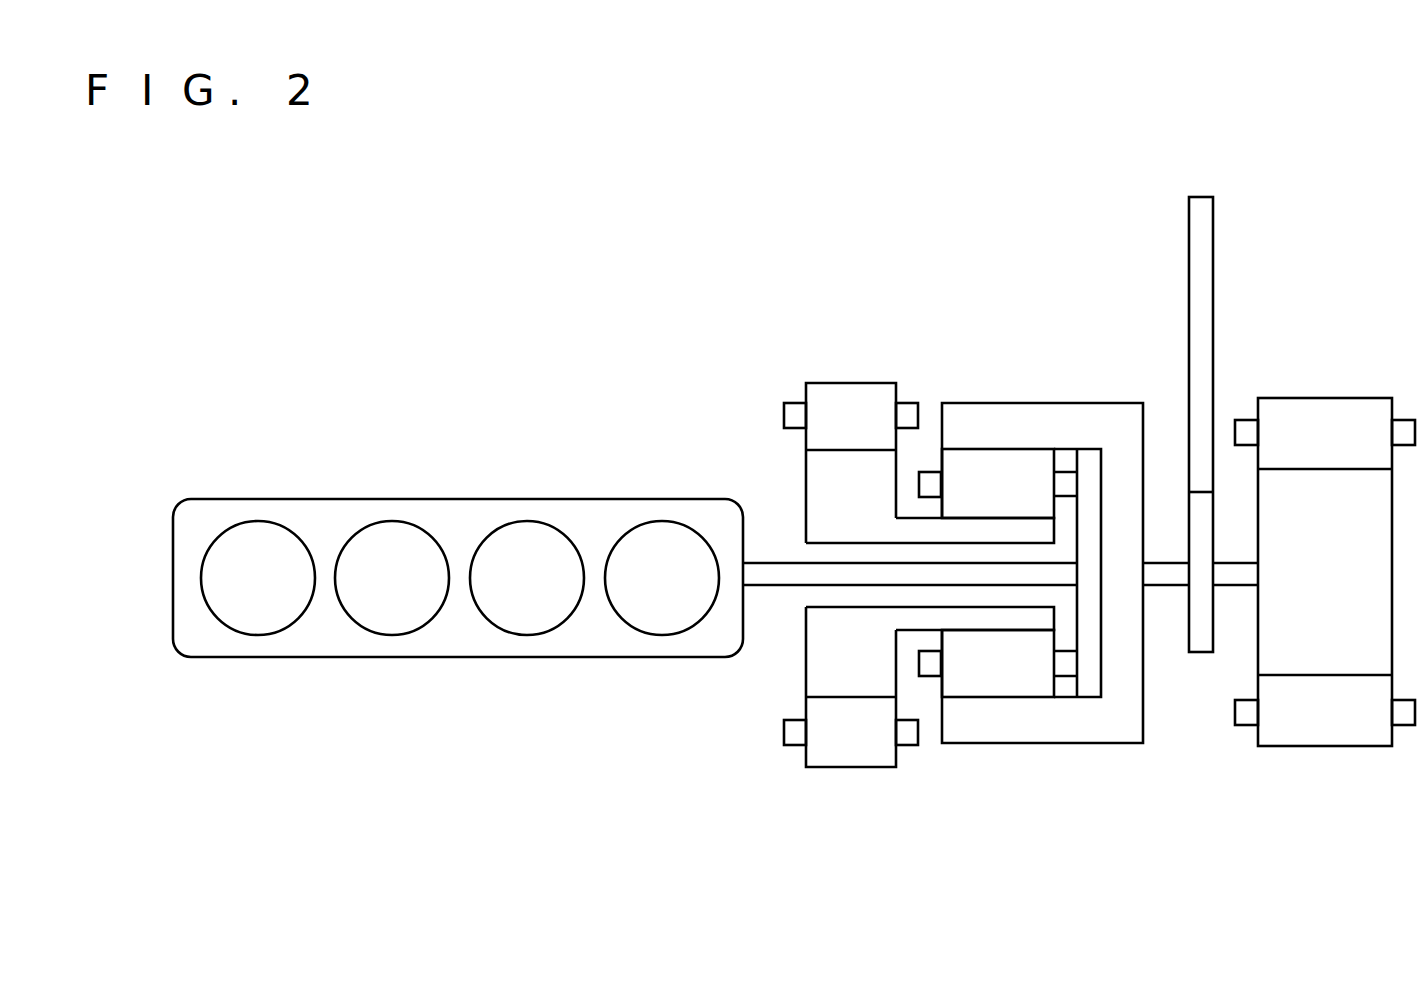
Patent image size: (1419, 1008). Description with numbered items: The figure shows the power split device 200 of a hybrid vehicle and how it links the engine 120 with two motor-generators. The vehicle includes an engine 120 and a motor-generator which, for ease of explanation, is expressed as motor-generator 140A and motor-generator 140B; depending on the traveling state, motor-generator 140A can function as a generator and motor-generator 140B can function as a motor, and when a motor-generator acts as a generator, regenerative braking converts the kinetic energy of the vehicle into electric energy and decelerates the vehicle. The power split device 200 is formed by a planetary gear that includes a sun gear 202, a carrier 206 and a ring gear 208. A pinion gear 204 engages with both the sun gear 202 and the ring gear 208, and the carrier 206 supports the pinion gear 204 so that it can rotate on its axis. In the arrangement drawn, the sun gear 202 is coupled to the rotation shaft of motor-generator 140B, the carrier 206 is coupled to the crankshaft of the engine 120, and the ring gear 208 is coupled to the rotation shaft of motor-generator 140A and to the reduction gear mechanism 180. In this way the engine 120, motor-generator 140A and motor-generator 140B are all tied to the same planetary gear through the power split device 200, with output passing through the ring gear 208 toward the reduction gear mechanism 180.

The engine 120 is at (460, 499).
The motor-generator (MG(2)) 140A is at (1324, 398).
The motor-generator (MG(1)) 140B is at (851, 382).
The reduction gear mechanism 180 is at (1224, 172).
The power split device 200 is at (982, 568).
The sun gear 202 is at (982, 630).
The pinion gear 204 is at (1018, 697).
The carrier 206 is at (1075, 610).
The ring gear 208 is at (1103, 743).